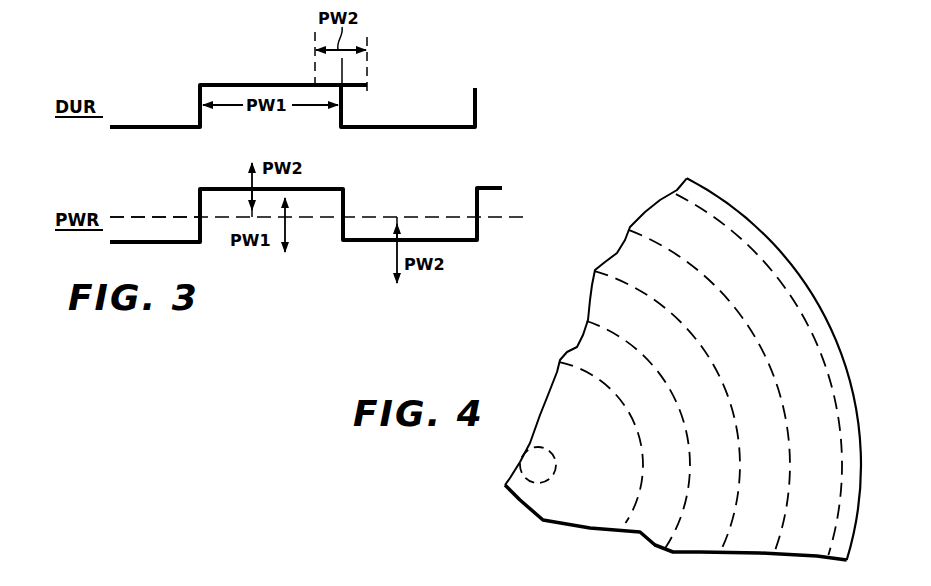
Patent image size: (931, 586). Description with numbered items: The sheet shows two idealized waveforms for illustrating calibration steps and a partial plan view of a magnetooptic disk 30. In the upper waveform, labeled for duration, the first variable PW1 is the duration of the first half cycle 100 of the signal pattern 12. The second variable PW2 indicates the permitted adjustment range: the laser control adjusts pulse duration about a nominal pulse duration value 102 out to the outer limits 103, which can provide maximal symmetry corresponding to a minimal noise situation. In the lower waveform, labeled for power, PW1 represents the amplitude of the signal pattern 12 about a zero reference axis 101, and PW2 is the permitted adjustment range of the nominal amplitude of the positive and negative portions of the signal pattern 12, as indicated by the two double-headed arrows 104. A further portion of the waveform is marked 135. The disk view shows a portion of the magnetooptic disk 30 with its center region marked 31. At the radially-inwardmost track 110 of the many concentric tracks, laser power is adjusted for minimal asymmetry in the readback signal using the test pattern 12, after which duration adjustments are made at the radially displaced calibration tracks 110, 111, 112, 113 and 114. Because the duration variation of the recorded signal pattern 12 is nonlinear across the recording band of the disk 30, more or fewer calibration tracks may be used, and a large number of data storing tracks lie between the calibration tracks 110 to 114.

In FIG. 3, the first half cycle 100 is at (228, 85).
In FIG. 3, the zero reference axis 101 is at (161, 216).
In FIG. 3, the nominal pulse duration value 102 is at (342, 62).
In FIG. 3, the outer limits 103 is at (314, 42).
In FIG. 3, the double-headed arrows 104 is at (243, 186).
In FIG. 3, the low power portion 135 is at (393, 95).
In FIG. 3, the signal pattern 12 is at (447, 95).
In FIG. 4, the magnetooptic disk 30 is at (596, 288).
In FIG. 4, the center hole 31 is at (548, 448).
In FIG. 4, the radially-inwardmost track 110 is at (643, 465).
In FIG. 4, the calibration track 111 is at (690, 465).
In FIG. 4, the calibration track 112 is at (740, 465).
In FIG. 4, the calibration track 113 is at (790, 465).
In FIG. 4, the calibration track 114 is at (842, 462).